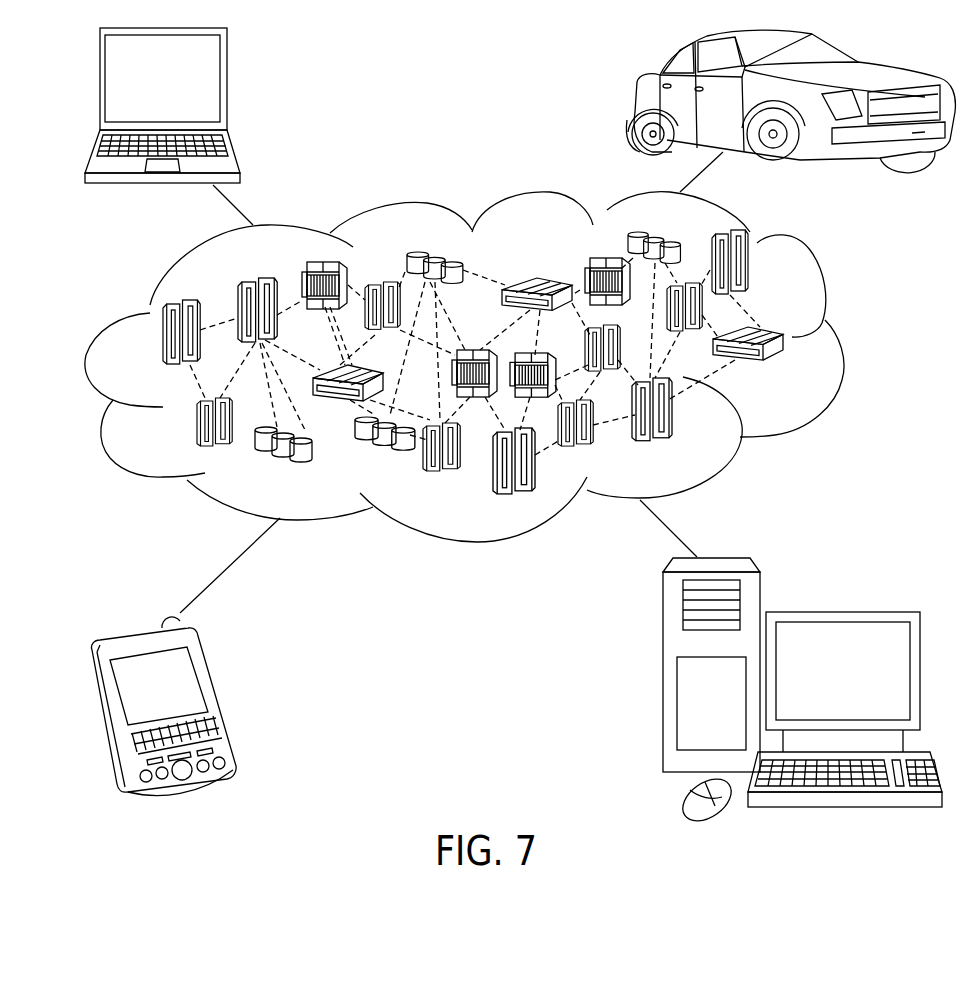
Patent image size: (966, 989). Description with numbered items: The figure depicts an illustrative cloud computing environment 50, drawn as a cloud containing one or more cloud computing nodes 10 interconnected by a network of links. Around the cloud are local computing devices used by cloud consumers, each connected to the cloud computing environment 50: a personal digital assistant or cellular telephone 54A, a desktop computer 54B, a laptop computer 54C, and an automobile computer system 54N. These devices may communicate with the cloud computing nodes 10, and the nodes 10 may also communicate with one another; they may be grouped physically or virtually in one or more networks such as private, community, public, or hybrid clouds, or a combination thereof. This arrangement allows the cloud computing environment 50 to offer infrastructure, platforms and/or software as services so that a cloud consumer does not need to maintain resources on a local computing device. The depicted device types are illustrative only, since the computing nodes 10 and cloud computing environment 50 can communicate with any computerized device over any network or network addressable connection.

The cloud computing environment 50 is at (840, 342).
The cloud computing nodes 10 is at (796, 374).
The personal digital assistant or cellular telephone 54A is at (218, 698).
The desktop computer 54B is at (840, 612).
The laptop computer 54C is at (227, 86).
The automobile computer system 54N is at (635, 100).